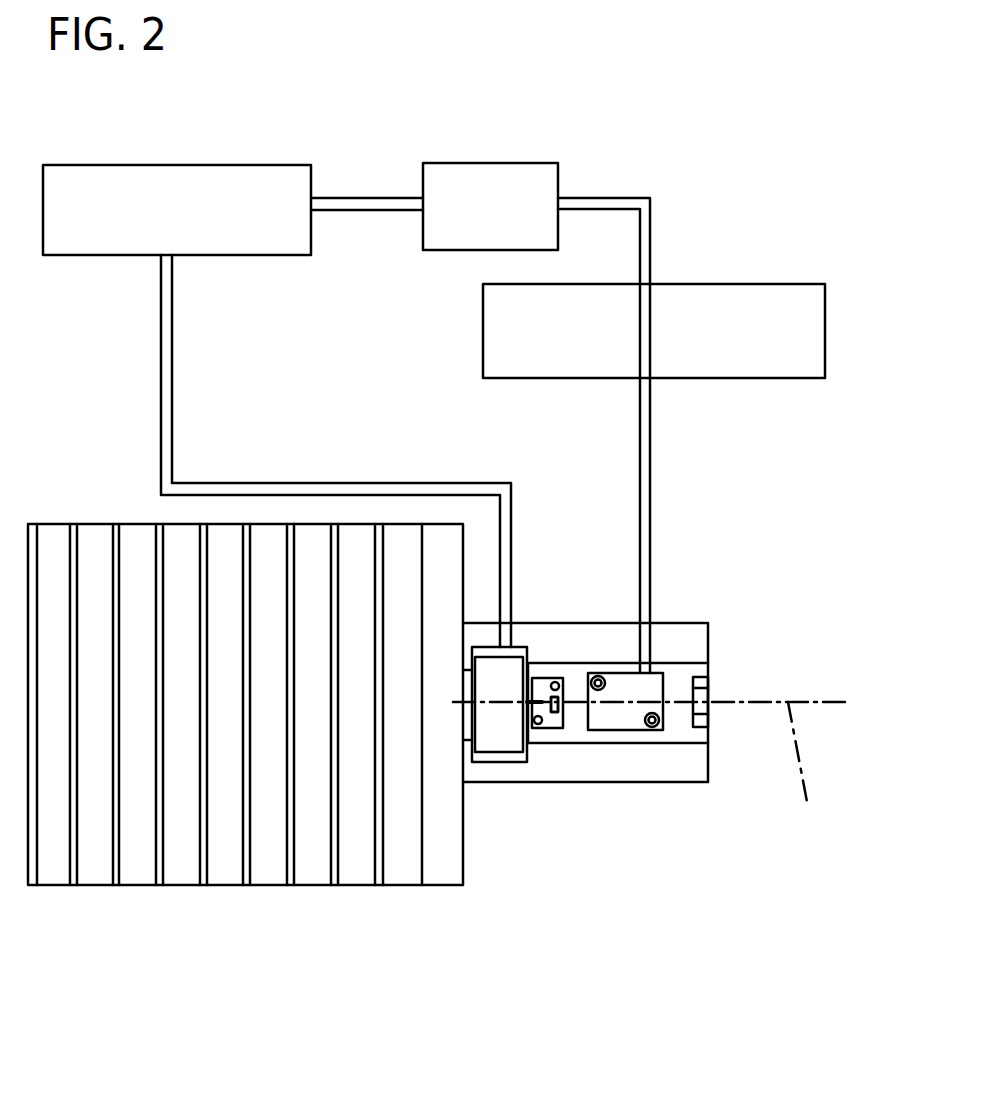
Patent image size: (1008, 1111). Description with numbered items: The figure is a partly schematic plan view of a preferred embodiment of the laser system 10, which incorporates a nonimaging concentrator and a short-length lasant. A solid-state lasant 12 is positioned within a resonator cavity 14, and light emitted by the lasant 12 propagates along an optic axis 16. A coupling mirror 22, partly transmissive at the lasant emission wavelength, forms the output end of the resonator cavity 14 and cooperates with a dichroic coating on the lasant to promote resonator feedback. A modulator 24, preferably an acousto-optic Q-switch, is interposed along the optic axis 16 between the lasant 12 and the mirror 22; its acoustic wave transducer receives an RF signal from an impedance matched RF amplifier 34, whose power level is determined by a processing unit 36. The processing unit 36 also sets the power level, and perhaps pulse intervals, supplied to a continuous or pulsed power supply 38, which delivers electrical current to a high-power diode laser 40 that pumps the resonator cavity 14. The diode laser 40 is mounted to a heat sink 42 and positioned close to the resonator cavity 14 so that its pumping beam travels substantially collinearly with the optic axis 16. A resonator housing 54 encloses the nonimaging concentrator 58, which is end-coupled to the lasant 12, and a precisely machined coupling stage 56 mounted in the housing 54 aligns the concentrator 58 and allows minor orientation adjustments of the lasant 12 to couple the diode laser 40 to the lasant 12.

The laser system 10 is at (604, 163).
The solid-state lasant 12 is at (560, 707).
The resonator cavity 14 is at (688, 672).
The optic axis 16 is at (805, 771).
The coupling mirror 22 is at (708, 700).
The modulator 24 is at (630, 732).
The impedance matched RF amplifier 34 is at (697, 284).
The processing unit 36 is at (460, 163).
The power supply 38 is at (185, 163).
The diode laser 40 is at (498, 763).
The heat sink 42 is at (415, 886).
The resonator housing 54 is at (668, 660).
The coupling stage 56 is at (547, 678).
The nonimaging concentrator 58 is at (550, 728).